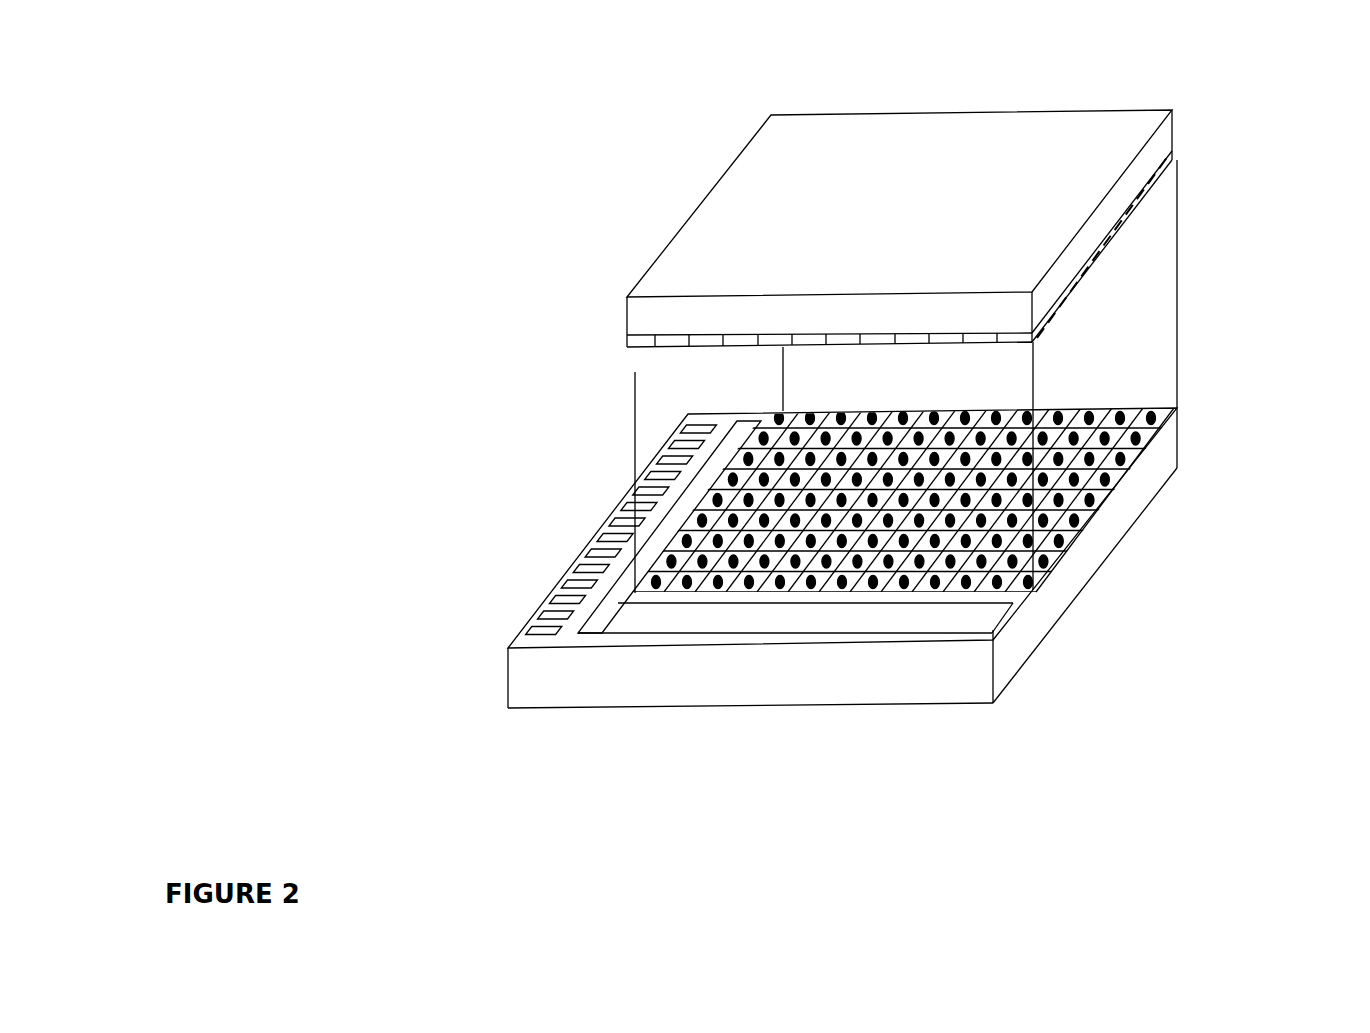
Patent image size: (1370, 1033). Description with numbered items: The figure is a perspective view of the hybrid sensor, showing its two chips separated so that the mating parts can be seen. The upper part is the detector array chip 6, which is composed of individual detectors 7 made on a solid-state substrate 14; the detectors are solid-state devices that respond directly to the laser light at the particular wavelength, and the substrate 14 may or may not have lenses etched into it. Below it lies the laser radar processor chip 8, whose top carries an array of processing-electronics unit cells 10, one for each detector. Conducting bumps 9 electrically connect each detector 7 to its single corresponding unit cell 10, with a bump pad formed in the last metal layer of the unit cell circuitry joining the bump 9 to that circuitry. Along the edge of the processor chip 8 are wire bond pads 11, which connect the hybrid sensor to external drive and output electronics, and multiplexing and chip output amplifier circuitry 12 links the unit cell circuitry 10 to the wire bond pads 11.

The detector array chip 6 is at (601, 308).
The individual detector 7 is at (1202, 126).
The solid-state substrate 14 is at (1146, 177).
The conducting bump 9 is at (1182, 378).
The laser radar processor chip 8 is at (578, 690).
The processing-electronics unit cell 10 is at (1040, 611).
The wire bond pad 11 is at (558, 559).
The multiplexing and chip output amplifier circuitry 12 is at (601, 639).